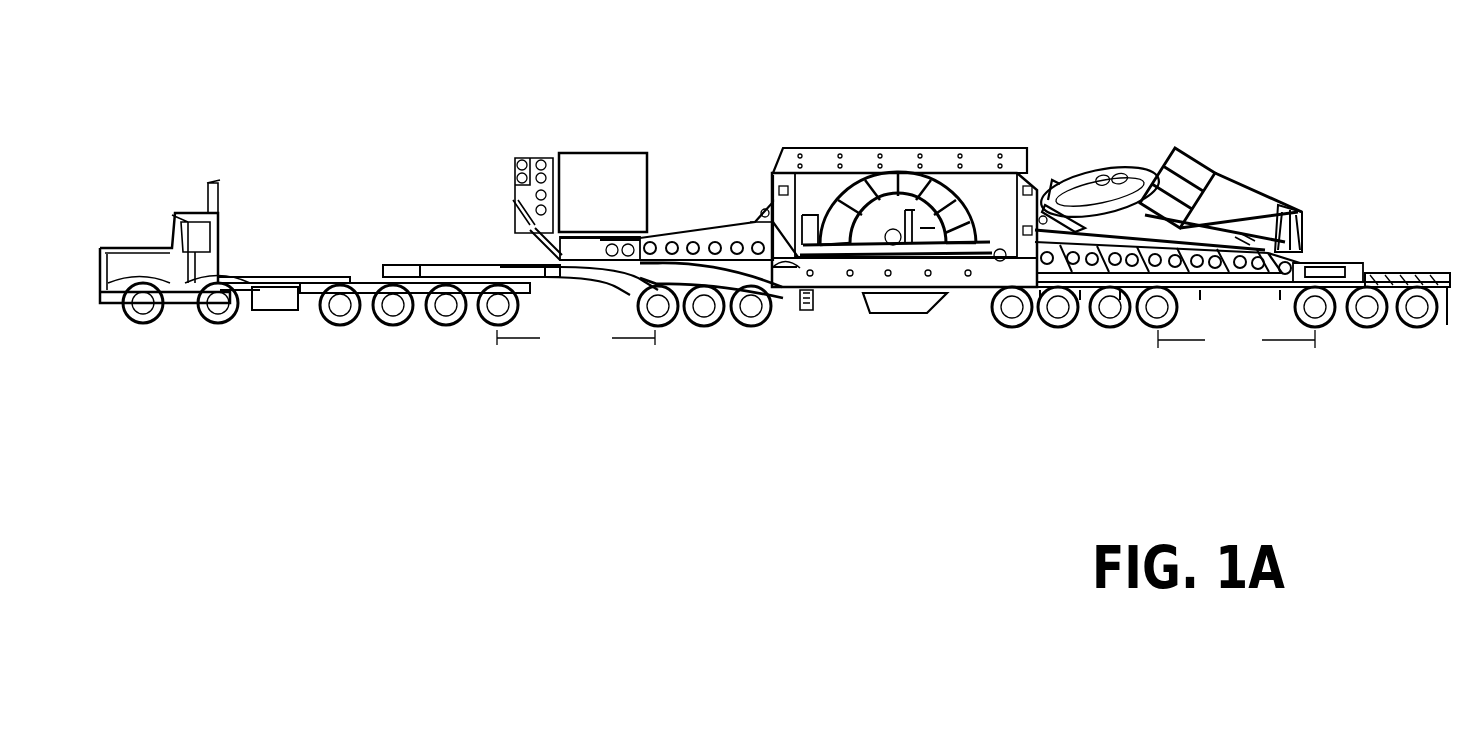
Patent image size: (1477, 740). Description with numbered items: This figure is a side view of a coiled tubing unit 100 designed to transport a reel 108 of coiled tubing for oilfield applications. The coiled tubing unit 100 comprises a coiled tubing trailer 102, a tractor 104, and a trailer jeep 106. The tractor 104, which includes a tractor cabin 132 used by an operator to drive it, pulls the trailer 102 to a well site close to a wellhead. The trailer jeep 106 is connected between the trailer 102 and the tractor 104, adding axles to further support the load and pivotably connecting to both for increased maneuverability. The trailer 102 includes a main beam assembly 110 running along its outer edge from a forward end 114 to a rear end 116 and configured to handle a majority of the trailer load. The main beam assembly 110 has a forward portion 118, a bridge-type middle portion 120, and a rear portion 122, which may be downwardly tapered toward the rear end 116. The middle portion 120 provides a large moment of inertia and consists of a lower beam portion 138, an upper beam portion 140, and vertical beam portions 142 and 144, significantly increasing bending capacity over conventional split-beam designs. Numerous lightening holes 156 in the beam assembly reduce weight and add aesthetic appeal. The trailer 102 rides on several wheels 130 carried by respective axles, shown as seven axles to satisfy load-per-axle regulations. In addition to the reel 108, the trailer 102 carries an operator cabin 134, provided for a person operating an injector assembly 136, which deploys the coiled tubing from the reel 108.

The coiled tubing unit 100 is at (1230, 50).
The coiled tubing trailer 102 is at (888, 342).
The tractor 104 is at (343, 352).
The trailer jeep 106 is at (628, 352).
The reel 108 is at (945, 190).
The main beam assembly 110 is at (666, 218).
The forward end 114 is at (490, 245).
The rear end 116 is at (1398, 242).
The forward portion 118 is at (715, 235).
The middle portion 120 is at (890, 128).
The rear portion 122 is at (1270, 292).
The wheels 130 is at (1429, 348).
The tractor cabin 132 is at (176, 217).
The operator cabin 134 is at (608, 150).
The injector assembly 136 is at (1272, 170).
The lower beam portion 138 is at (832, 302).
The upper beam portion 140 is at (826, 148).
The vertical beam portion 142 is at (770, 160).
The vertical beam portion 144 is at (1040, 170).
The lightening holes 156 is at (697, 240).